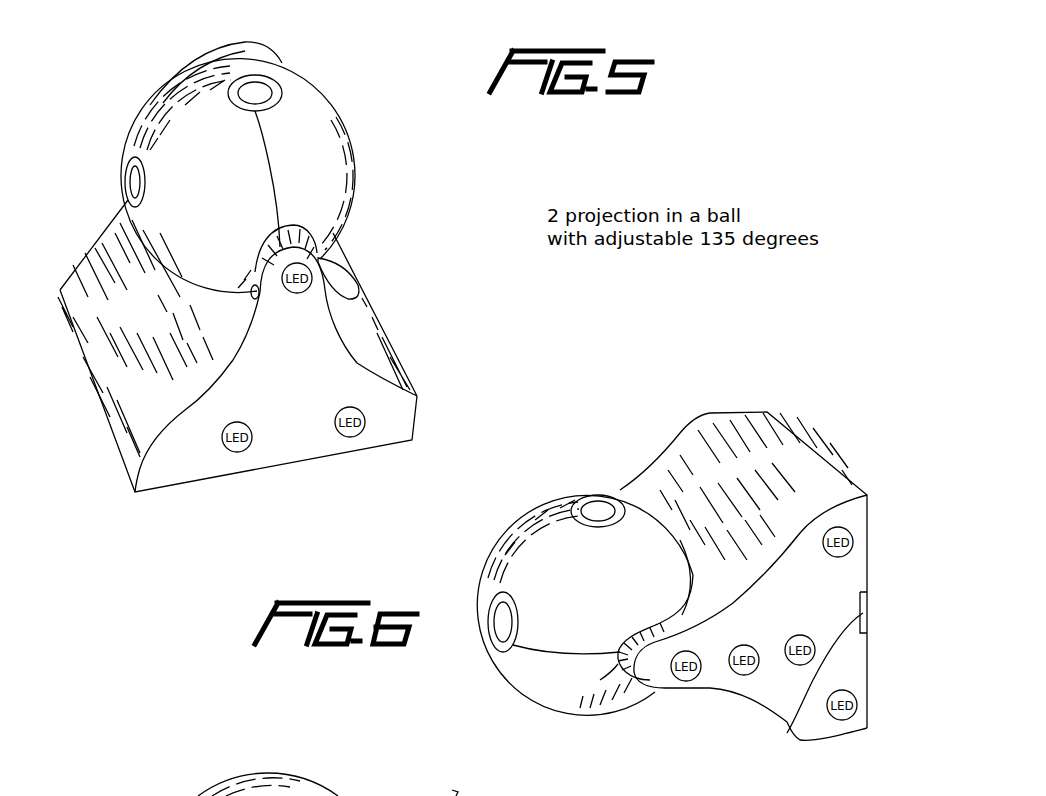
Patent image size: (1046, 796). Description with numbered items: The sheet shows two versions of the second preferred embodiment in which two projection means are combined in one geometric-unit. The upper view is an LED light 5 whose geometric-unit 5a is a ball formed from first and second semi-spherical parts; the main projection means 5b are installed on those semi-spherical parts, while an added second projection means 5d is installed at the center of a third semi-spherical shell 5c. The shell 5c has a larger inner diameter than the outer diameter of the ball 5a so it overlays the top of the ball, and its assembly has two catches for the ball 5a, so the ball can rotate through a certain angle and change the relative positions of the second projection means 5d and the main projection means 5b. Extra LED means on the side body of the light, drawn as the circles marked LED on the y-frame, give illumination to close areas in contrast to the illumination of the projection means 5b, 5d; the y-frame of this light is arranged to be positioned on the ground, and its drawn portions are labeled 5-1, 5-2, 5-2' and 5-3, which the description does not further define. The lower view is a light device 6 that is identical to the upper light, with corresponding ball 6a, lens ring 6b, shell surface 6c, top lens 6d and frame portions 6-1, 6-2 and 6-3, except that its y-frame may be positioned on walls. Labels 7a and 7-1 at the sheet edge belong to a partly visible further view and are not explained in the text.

In FIG. 5, the LED light 5 is at (117, 253).
In FIG. 5, the geometric-unit (ball) 5a is at (335, 163).
In FIG. 5, the main projection means 5b is at (273, 90).
In FIG. 5, the third semi-spherical shell 5c is at (167, 112).
In FIG. 5, the second projection means 5d is at (130, 177).
In FIG. 5, the base 5-1 is at (118, 405).
In FIG. 5, the ball support hump 5-2 is at (328, 248).
In FIG. 5, the ball top cap 5-2' is at (233, 57).
In FIG. 5, the ball socket 5-3 is at (347, 287).
In FIG. 6, the projector unit with ball in base 6 is at (667, 487).
In FIG. 6, the ball housing 6a is at (563, 687).
In FIG. 6, the side projection lens ring 6b is at (498, 633).
In FIG. 6, the ball upper surface 6c is at (528, 547).
In FIG. 6, the top projection lens ring 6d is at (593, 500).
In FIG. 6, the base top face 6-1 is at (735, 447).
In FIG. 6, the ball support hump 6-2 is at (653, 672).
In FIG. 6, the base side face 6-3 is at (790, 726).
In FIG. 7, the ball housing 7a is at (122, 795).
In FIG. 7, the base 7-1 is at (388, 795).